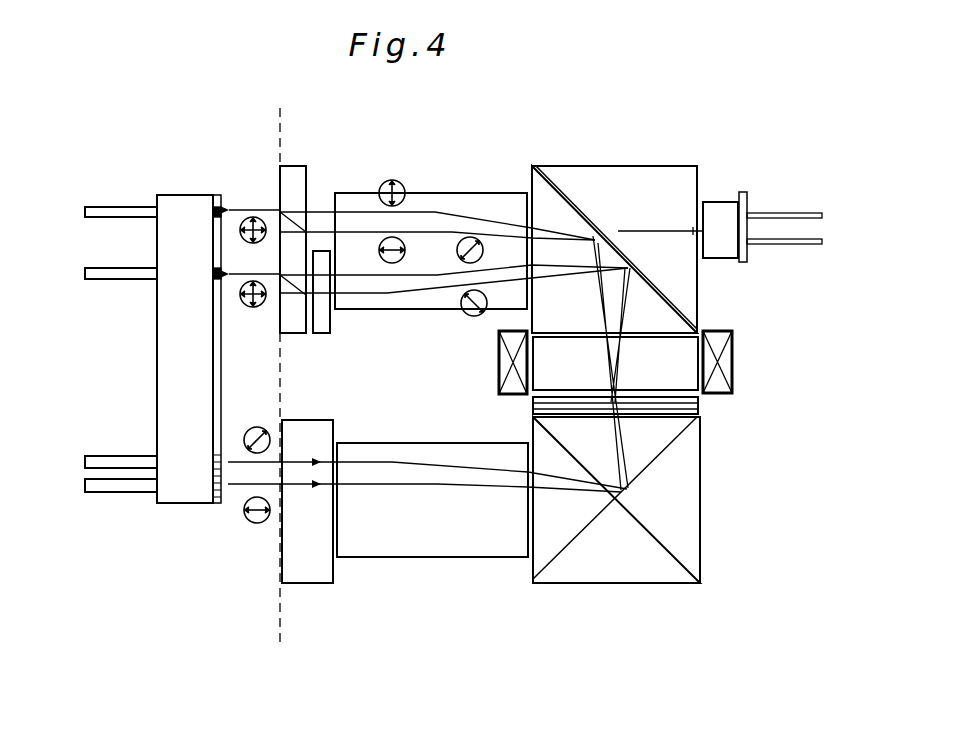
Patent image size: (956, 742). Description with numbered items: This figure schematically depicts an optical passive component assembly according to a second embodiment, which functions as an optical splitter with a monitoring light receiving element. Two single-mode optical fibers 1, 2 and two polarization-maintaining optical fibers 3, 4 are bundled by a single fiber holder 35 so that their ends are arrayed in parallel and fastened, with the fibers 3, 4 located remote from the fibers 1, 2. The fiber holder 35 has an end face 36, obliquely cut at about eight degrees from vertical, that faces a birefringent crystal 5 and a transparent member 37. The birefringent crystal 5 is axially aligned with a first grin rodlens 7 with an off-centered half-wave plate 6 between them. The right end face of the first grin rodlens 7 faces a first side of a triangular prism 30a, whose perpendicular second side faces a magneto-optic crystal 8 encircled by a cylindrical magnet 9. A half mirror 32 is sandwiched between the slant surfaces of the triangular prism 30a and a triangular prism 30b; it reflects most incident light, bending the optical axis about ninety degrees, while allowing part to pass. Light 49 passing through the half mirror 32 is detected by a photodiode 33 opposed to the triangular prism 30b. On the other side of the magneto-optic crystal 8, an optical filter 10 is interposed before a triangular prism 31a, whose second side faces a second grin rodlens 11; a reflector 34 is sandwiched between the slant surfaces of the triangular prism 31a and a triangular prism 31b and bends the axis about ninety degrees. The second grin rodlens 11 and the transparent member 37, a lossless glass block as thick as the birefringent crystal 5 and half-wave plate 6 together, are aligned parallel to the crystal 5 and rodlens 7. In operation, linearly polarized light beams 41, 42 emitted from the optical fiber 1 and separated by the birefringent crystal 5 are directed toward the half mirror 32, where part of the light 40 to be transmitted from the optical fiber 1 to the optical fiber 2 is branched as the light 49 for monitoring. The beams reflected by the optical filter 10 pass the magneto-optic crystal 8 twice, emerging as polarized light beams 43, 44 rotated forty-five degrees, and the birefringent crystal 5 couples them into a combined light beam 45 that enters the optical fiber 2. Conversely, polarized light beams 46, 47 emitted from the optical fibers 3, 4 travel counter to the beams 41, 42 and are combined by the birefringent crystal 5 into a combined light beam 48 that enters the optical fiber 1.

The single-mode optical fiber 1 is at (135, 211).
The single-mode optical fiber 2 is at (132, 273).
The polarization-maintaining optical fiber 3 is at (135, 463).
The polarization-maintaining optical fiber 4 is at (135, 487).
The birefringent crystal 5 is at (297, 173).
The half-wave plate 6 is at (320, 326).
The first grin rodlens 7 is at (503, 198).
The magneto-optic crystal 8 is at (667, 347).
The cylindrical magnet 9 is at (497, 370).
The optical filter 10 is at (700, 403).
The second grin rodlens 11 is at (512, 545).
The triangular prism 30a is at (537, 188).
The triangular prism 30b is at (628, 178).
The triangular prism 31a is at (547, 553).
The triangular prism 31b is at (652, 567).
The half mirror 32 is at (575, 203).
The photodiode 33 is at (720, 210).
The reflector 34 is at (657, 457).
The fiber holder 35 is at (185, 203).
The end face 36 is at (218, 405).
The transparent member 37 is at (320, 572).
The light 40 is at (269, 210).
The linearly polarized light beam 41 is at (435, 213).
The linearly polarized light beam 42 is at (452, 233).
The polarized light beam 43 is at (388, 290).
The polarized light beam 44 is at (437, 270).
The combined light beam 45 is at (238, 283).
The polarized light beam 46 is at (392, 465).
The polarized light beam 47 is at (437, 483).
The combined light beam 48 is at (233, 210).
The light 49 is at (677, 230).